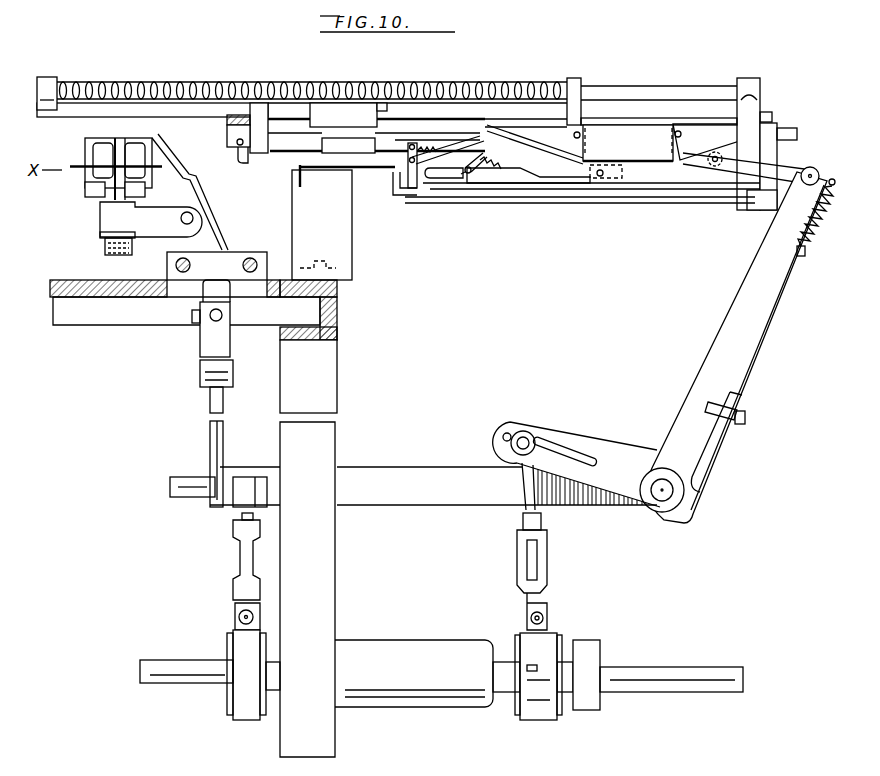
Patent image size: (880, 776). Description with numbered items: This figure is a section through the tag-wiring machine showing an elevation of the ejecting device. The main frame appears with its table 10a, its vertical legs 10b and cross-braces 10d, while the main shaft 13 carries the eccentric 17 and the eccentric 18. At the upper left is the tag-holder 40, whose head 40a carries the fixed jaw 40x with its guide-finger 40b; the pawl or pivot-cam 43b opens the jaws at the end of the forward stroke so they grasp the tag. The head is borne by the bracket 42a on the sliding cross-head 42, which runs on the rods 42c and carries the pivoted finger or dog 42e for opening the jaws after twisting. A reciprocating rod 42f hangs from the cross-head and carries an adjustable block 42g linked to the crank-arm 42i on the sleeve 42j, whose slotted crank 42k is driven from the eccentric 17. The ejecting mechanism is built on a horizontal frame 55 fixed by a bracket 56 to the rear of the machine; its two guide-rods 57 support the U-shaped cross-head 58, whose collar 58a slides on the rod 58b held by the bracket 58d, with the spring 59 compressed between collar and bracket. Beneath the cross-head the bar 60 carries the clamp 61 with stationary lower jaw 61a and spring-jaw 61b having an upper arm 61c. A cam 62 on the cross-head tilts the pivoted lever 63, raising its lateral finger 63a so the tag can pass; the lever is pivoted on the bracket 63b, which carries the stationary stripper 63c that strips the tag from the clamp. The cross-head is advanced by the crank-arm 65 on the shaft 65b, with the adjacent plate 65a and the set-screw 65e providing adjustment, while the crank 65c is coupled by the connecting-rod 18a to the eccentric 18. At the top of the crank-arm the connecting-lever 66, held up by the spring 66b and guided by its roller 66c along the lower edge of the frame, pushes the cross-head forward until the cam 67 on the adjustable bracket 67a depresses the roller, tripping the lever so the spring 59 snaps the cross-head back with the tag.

The table 10a is at (86, 282).
The legs 10b is at (327, 372).
The cross-braces 10d is at (85, 312).
The main shaft 13 is at (686, 690).
The eccentric 17 is at (240, 645).
The eccentric 18 is at (540, 648).
The connecting-rod 18a is at (548, 555).
The tag-holder 40 is at (102, 150).
The head 40a is at (90, 185).
The guide-finger 40b is at (118, 140).
The fixed jaw 40x is at (183, 136).
The sliding cross-head 42 is at (217, 266).
The bracket 42a is at (190, 258).
The rods 42c is at (246, 252).
The finger or dog 42e is at (109, 215).
The reciprocating rod 42f is at (224, 316).
The adjustable block 42g is at (200, 337).
The crank-arm 42i is at (210, 440).
The sleeve 42j is at (248, 427).
The slotted crank 42k is at (268, 490).
The pawl or pivot-cam 43b is at (105, 240).
The horizontal frame 55 is at (446, 115).
The bracket 56 is at (348, 240).
The guide-rods 57 is at (470, 135).
The U-shaped cross-head 58 is at (610, 118).
The boss or collar 58a is at (42, 80).
The rod 58b is at (675, 90).
The bracket 58d is at (748, 80).
The spring 59 is at (285, 83).
The bar 60 is at (545, 184).
The clamp 61 is at (473, 180).
The stationary lower jaw 61a is at (236, 152).
The spring-jaw 61b is at (444, 184).
The upper extension or arm 61c is at (492, 175).
The cam 62 is at (558, 190).
The pivoted lever 63 is at (492, 140).
The lateral finger 63a is at (296, 170).
The bracket 63b is at (423, 195).
The stripper 63c is at (398, 181).
The crank-arm 65 is at (750, 335).
The arm plate 65a is at (720, 446).
The shaft 65b is at (674, 493).
The crank 65c is at (572, 442).
The set-screw 65e is at (746, 414).
The connecting-lever 66 is at (736, 166).
The spring 66b is at (806, 242).
The roller 66c is at (708, 173).
The cam 67 is at (339, 146).
The adjustable bracket 67a is at (383, 103).